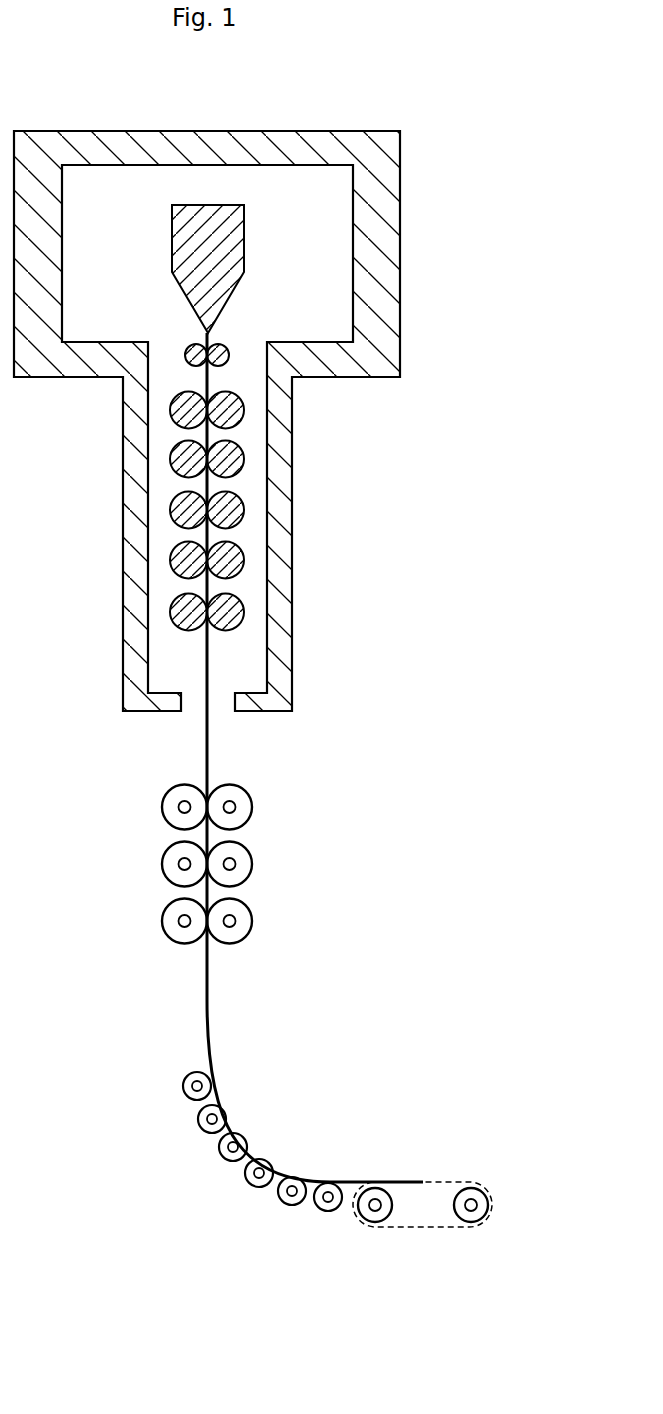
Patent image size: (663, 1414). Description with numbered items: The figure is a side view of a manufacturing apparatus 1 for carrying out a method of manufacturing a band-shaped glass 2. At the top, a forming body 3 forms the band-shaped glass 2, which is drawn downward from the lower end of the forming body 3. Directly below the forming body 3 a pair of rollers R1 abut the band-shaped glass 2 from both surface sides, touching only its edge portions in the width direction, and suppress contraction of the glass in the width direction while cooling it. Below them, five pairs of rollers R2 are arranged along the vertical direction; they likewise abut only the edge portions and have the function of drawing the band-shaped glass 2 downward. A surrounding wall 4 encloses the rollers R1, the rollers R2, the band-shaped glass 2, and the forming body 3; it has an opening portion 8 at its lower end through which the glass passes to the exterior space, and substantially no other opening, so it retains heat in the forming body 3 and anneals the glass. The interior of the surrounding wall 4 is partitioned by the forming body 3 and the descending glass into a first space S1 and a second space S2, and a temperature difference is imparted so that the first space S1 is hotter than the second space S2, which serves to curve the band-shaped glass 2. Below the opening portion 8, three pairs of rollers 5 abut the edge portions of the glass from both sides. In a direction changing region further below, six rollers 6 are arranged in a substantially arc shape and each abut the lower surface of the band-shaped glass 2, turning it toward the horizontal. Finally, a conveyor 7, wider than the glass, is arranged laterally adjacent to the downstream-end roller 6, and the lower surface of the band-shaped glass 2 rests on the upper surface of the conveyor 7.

The manufacturing apparatus 1 is at (396, 618).
The band-shaped glass 2 is at (222, 1025).
The forming body 3 is at (244, 235).
The surrounding wall 4 is at (400, 318).
The rollers 5 is at (162, 803).
The rollers 6 is at (220, 1157).
The conveyor 7 is at (493, 1203).
The opening portion 8 is at (238, 722).
The rollers R1 is at (185, 358).
The rollers R2 is at (170, 612).
The first space S1 is at (232, 662).
The second space S2 is at (183, 662).